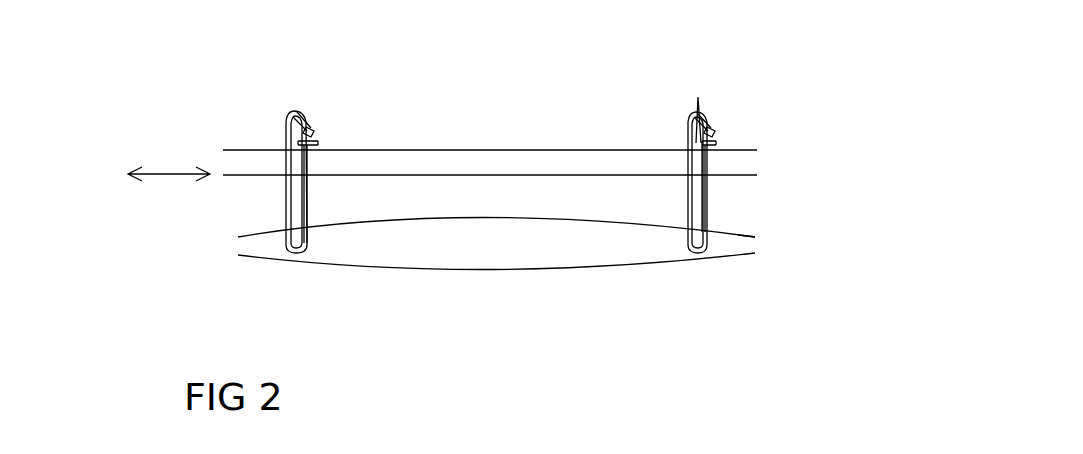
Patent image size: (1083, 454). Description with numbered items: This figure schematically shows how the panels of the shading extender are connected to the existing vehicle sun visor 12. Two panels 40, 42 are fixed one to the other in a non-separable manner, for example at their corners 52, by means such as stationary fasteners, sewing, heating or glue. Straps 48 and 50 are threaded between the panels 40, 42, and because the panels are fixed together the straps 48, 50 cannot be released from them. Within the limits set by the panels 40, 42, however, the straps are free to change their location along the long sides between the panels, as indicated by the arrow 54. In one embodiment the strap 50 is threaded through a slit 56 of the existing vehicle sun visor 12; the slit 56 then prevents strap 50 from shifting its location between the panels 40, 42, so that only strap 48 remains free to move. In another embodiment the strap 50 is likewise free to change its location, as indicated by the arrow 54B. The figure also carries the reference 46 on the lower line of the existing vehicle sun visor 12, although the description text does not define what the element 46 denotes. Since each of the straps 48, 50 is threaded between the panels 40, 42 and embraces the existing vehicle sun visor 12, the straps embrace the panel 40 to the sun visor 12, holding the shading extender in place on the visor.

The existing vehicle sun visor 12 is at (250, 150).
The panel 40 is at (258, 236).
The panel 42 is at (270, 257).
The lower layer 46 is at (272, 176).
The strap 48 is at (308, 190).
The strap 50 is at (688, 138).
The corners 52 is at (758, 240).
The arrow 54 is at (305, 110).
The arrow 54B is at (702, 71).
The slit 56 is at (700, 103).